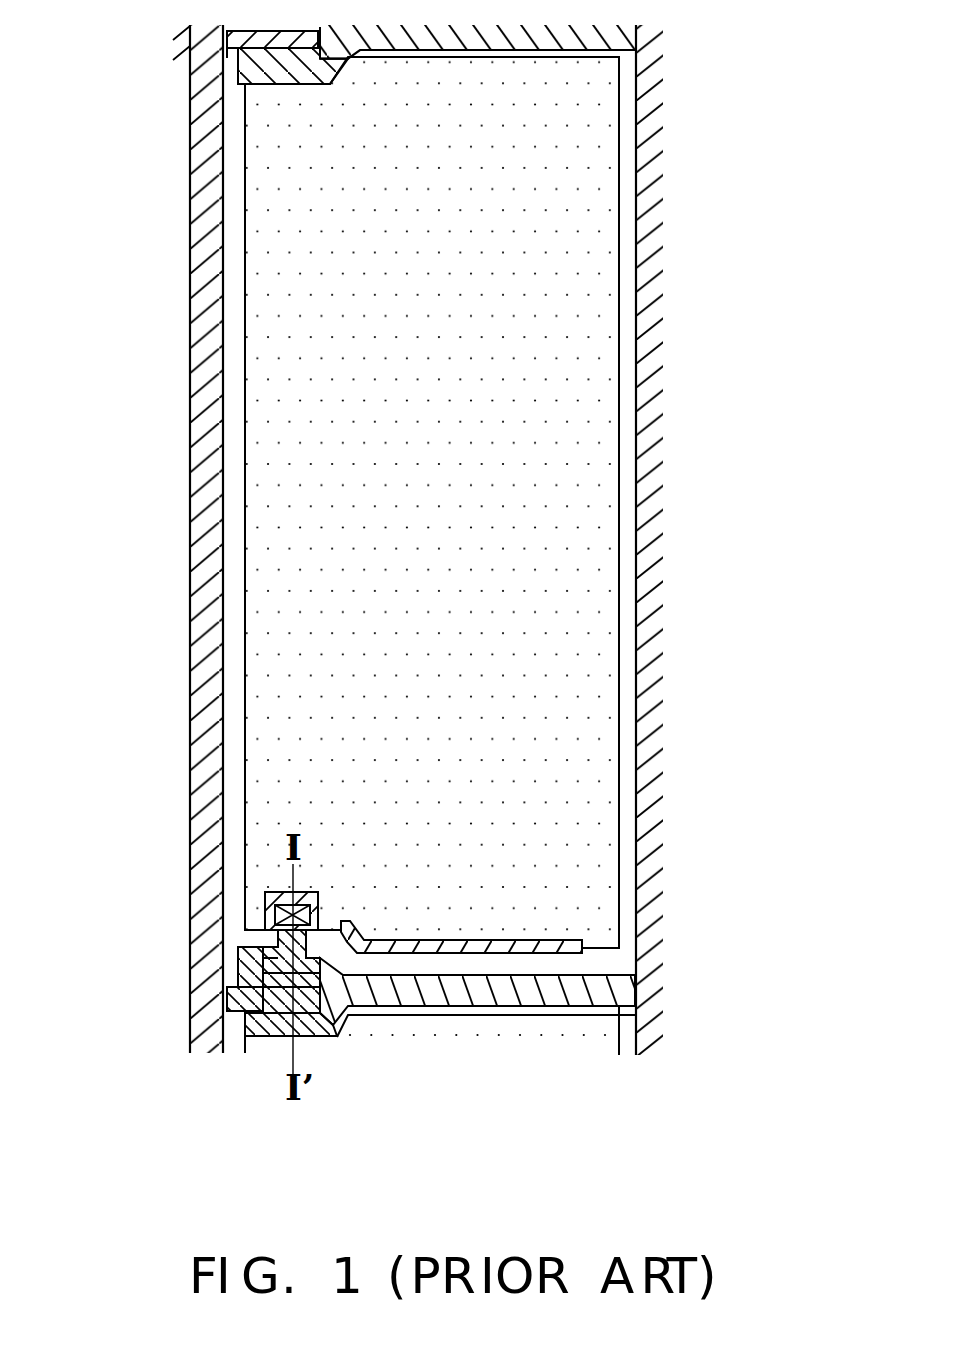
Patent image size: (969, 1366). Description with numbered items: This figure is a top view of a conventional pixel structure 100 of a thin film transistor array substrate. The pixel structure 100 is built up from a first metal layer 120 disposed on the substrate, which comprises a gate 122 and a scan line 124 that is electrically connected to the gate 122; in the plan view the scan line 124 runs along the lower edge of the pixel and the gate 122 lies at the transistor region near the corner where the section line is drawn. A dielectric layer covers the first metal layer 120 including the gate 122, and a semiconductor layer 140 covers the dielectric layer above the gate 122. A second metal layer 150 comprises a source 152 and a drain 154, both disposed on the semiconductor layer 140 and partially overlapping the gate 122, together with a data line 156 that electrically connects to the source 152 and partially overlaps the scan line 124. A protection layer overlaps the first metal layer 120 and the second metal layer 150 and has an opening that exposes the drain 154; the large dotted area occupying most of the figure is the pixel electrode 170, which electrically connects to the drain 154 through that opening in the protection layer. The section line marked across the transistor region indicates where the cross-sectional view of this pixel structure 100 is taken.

The pixel structure 100 is at (770, 1183).
The first metal layer 120 is at (473, 1053).
The gate 122 is at (312, 1030).
The scan line 124 is at (415, 1003).
The semiconductor layer 140 is at (267, 1040).
The second metal layer 150 is at (196, 1036).
The source 152 is at (297, 988).
The drain 154 is at (267, 977).
The data line 156 is at (276, 962).
The pixel electrode 170 is at (607, 893).